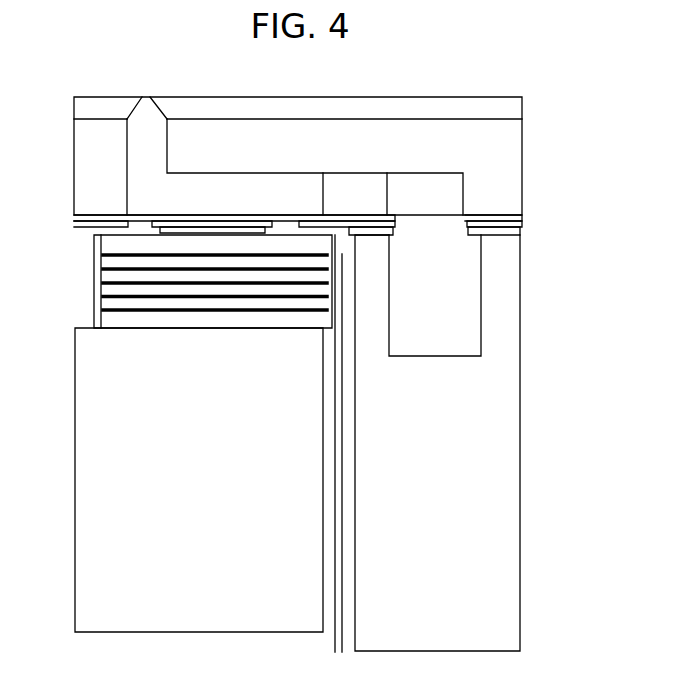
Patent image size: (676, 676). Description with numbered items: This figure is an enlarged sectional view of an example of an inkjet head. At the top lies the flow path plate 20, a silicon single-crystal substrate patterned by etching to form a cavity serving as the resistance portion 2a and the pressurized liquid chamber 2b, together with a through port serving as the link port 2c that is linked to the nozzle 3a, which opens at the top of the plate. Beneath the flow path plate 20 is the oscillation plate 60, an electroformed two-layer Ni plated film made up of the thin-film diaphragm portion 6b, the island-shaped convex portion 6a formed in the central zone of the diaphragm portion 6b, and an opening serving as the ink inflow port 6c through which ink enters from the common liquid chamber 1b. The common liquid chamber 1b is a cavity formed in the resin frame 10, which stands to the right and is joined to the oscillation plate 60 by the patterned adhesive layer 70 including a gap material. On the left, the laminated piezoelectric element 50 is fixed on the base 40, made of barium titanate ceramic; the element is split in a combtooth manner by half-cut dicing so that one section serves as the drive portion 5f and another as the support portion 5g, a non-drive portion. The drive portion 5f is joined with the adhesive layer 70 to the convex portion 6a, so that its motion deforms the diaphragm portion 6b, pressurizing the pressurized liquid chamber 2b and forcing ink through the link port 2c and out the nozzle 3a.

The frame 10 is at (500, 452).
The common liquid chamber 1b is at (458, 325).
The flow path plate 20 is at (508, 160).
The resistance portion 2a is at (360, 188).
The pressurized liquid chamber 2b is at (247, 188).
The link port 2c is at (143, 140).
The nozzle 3a is at (150, 96).
The base 40 is at (80, 465).
The laminated piezoelectric element 50 is at (104, 283).
The drive portion 5f is at (333, 290).
The support portion 5g is at (95, 257).
The oscillation plate 60 is at (527, 219).
The convex portion 6a is at (207, 221).
The diaphragm portion 6b is at (163, 220).
The ink inflow port 6c is at (456, 237).
The adhesive layer 70 is at (488, 228).